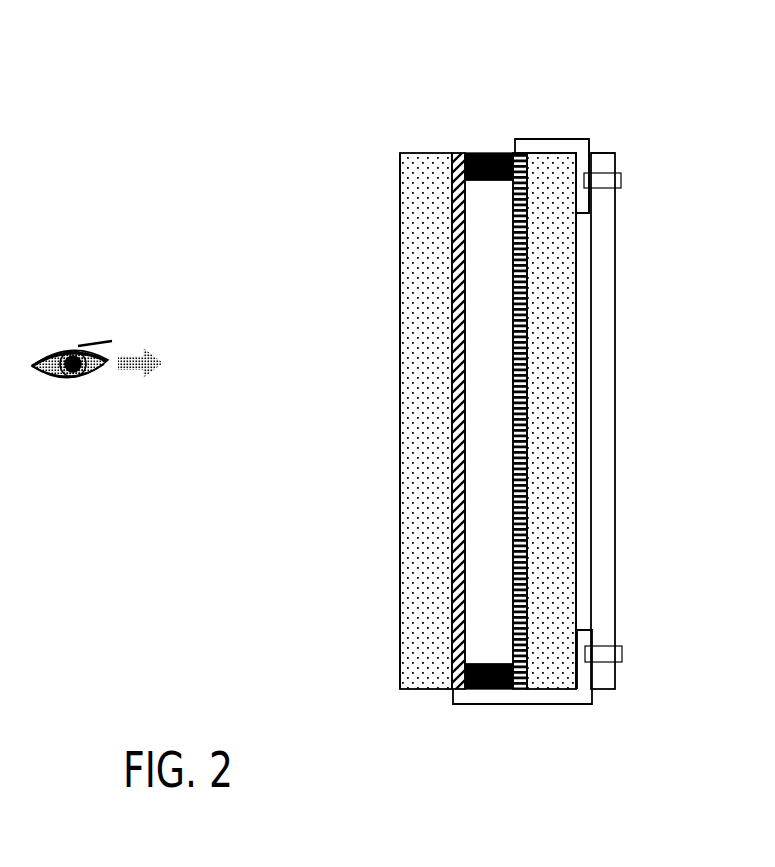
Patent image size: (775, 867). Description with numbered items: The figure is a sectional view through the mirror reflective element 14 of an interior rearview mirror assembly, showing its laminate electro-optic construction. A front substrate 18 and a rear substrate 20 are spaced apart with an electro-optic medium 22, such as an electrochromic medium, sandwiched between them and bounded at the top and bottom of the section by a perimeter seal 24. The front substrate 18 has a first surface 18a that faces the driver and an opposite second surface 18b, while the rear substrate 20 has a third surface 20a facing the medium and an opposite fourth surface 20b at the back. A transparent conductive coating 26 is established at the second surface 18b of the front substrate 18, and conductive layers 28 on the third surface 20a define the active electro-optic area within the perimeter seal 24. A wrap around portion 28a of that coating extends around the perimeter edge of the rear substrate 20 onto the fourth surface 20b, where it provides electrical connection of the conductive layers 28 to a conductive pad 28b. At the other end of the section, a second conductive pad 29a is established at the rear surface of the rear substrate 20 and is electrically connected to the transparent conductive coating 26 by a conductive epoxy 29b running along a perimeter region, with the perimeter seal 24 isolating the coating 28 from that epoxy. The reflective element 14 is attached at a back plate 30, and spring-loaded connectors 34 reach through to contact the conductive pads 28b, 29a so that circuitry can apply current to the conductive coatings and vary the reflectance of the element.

The mirror reflective element 14 is at (293, 98).
The front substrate 18 is at (425, 450).
The first surface 18a is at (400, 328).
The second surface 18b is at (455, 573).
The rear substrate 20 is at (563, 389).
The third surface 20a is at (526, 321).
The fourth surface 20b is at (577, 222).
The electro-optic medium 22 is at (490, 282).
The perimeter seal 24 is at (490, 153).
The transparent conductive coating 26 is at (458, 513).
The conductive layers 28 is at (520, 457).
The wrap around portion 28a is at (543, 142).
The conductive pad 28b is at (590, 152).
The conductive pad 29a is at (587, 688).
The conductive epoxy 29b is at (480, 697).
The back plate 30 is at (603, 495).
The spring-loaded connectors 34 is at (602, 178).